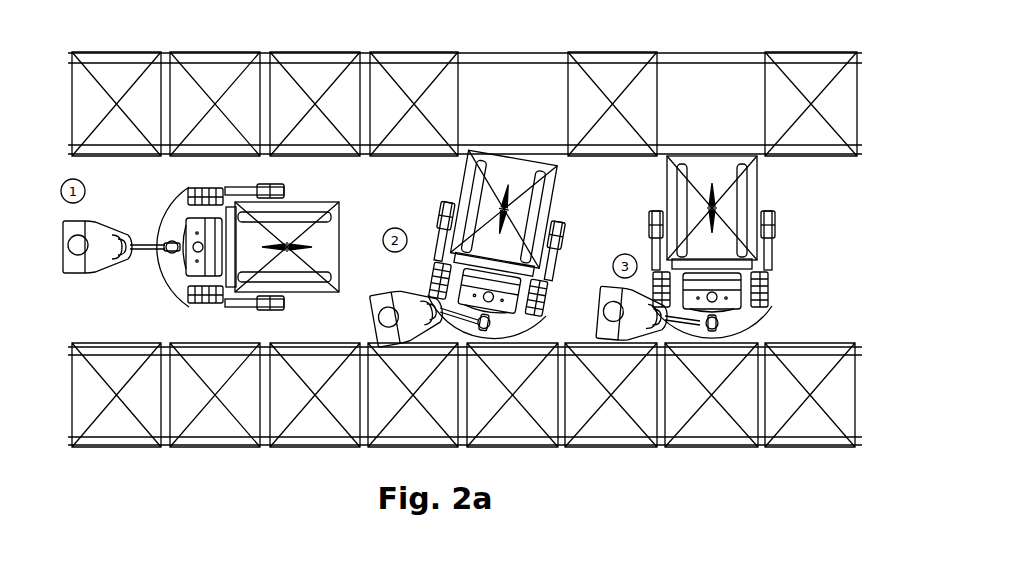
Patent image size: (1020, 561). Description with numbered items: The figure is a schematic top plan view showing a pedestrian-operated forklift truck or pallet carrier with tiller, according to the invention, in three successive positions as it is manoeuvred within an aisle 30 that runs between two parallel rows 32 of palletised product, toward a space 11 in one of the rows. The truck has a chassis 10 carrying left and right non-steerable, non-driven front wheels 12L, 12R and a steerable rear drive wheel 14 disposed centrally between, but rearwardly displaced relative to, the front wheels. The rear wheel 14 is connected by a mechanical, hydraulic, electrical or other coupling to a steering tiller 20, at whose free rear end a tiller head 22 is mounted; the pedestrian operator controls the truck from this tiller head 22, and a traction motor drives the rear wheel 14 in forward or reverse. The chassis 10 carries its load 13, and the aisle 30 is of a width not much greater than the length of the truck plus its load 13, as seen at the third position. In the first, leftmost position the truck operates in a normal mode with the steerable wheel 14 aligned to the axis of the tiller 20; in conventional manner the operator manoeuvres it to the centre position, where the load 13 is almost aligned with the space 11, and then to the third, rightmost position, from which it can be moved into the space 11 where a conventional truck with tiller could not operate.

The chassis 10 is at (180, 204).
The space 11 is at (519, 78).
The left front wheel 12L is at (270, 185).
The right front wheel 12R is at (271, 303).
The load 13 is at (338, 226).
The steerable rear drive wheel 14 is at (170, 286).
The tiller 20 is at (144, 242).
The tiller head 22 is at (122, 263).
The aisle 30 is at (478, 236).
The rows of palletised product 32 is at (478, 236).